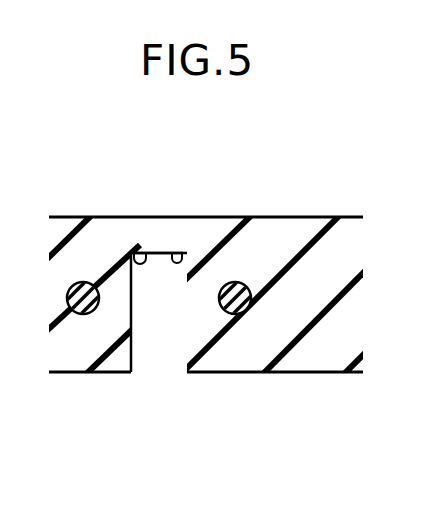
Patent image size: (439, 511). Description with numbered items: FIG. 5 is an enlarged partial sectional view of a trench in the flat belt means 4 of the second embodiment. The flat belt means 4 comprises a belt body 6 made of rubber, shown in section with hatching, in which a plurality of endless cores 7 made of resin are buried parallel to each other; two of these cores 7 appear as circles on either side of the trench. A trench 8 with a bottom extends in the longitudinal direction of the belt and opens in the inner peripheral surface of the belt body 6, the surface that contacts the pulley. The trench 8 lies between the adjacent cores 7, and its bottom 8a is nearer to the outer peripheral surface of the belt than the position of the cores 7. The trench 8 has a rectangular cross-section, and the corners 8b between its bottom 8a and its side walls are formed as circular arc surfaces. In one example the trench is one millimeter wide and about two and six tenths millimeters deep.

The flat belt means 4 is at (63, 210).
The belt body 6 is at (260, 230).
The endless cores 7 is at (72, 314).
The trench 8 is at (186, 352).
The bottom 8a is at (137, 252).
The corners 8b is at (178, 252).